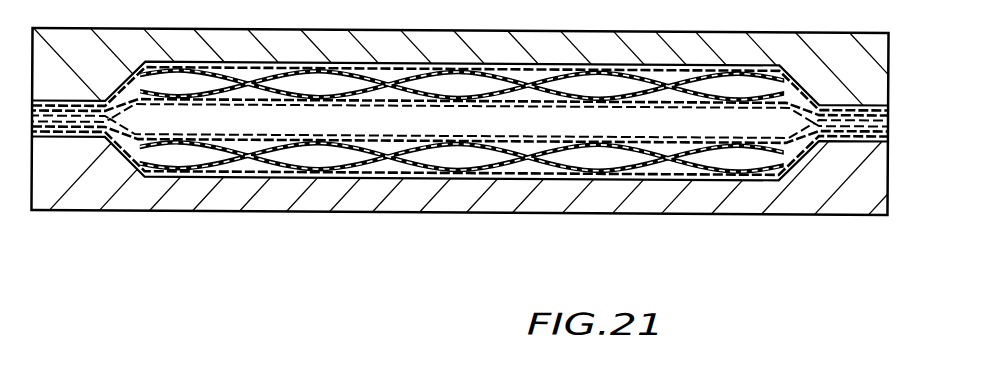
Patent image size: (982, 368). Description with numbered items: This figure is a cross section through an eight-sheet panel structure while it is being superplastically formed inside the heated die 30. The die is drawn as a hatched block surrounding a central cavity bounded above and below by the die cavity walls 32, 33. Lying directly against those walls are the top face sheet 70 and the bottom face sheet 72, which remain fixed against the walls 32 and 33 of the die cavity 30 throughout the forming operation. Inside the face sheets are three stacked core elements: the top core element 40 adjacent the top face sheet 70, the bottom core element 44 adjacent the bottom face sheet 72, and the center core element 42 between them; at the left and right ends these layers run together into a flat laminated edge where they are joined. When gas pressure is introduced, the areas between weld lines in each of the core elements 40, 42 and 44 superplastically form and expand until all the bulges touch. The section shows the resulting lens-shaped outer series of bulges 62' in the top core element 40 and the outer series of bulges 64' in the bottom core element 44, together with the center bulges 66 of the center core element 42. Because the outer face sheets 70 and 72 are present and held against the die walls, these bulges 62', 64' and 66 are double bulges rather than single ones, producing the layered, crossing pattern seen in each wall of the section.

The heated die 30 is at (869, 41).
The die cavity wall 32 is at (747, 66).
The die cavity wall 33 is at (762, 175).
The top core element 40 is at (169, 64).
The center core element 42 is at (168, 127).
The bottom core element 44 is at (230, 157).
The outer series of bulges 62' is at (528, 50).
The outer series of bulges 64' is at (527, 209).
The center bulges 66 is at (613, 142).
The top face sheet 70 is at (430, 64).
The bottom face sheet 72 is at (304, 179).